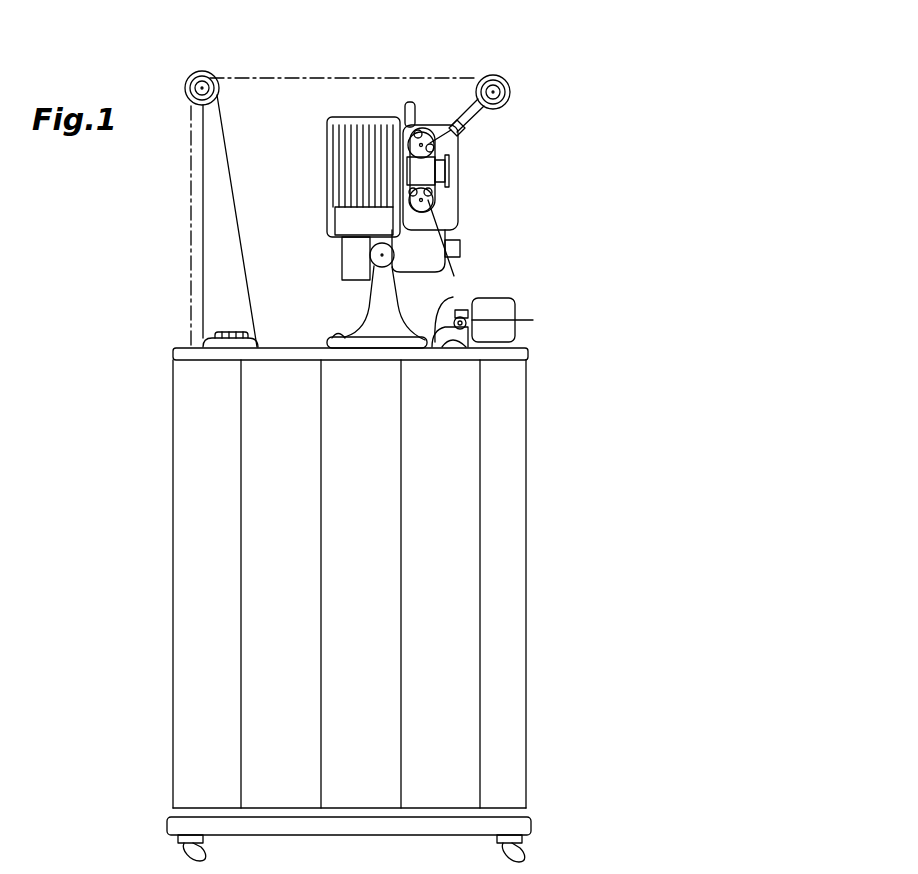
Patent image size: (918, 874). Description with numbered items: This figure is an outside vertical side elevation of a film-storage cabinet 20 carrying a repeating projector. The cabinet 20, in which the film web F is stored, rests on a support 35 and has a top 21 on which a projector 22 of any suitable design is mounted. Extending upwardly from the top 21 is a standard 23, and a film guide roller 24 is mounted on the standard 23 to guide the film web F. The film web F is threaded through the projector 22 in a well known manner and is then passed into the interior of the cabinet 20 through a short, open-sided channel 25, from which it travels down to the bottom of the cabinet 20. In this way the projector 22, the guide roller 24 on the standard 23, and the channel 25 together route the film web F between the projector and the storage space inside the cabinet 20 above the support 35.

The cabinet 20 is at (528, 497).
The top 21 is at (282, 346).
The projector 22 is at (327, 152).
The standard 23 is at (240, 220).
The film guide roller 24 is at (204, 71).
The short, open-sided channel 25 is at (458, 316).
The support 35 is at (532, 823).
The film web F is at (190, 225).